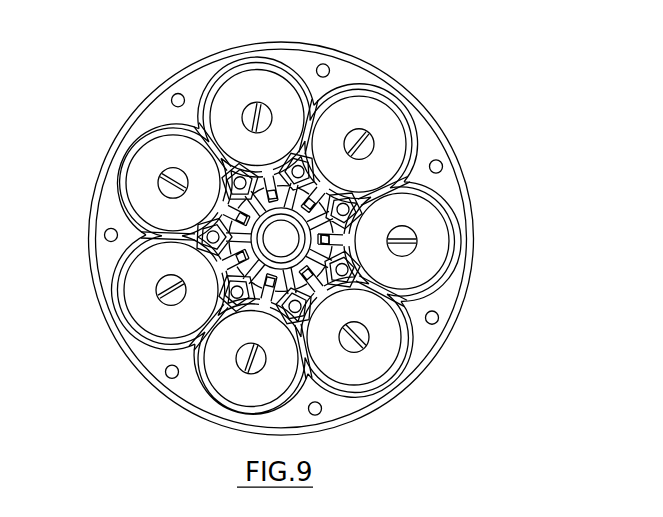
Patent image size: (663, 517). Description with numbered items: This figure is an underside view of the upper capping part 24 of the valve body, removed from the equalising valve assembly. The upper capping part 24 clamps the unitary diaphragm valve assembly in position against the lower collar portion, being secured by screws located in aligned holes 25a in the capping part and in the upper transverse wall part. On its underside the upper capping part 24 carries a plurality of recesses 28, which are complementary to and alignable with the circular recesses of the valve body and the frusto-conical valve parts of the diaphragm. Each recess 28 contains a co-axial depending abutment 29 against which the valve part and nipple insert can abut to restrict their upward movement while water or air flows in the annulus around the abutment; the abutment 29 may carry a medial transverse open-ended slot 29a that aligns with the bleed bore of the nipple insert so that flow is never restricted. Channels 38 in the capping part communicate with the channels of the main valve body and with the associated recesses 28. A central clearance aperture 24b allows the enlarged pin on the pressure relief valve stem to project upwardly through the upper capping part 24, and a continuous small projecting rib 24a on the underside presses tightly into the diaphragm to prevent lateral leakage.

The upper capping part 24 is at (457, 135).
The nut bosses 24a is at (347, 206).
The central clearance aperture 24b is at (275, 238).
The holes 25a is at (349, 210).
The recesses 28 is at (372, 341).
The co-axial depending abutment 29 is at (413, 231).
The medial transverse open-ended slot 29a is at (390, 243).
The channels 38 is at (334, 241).